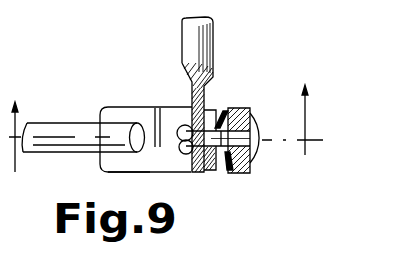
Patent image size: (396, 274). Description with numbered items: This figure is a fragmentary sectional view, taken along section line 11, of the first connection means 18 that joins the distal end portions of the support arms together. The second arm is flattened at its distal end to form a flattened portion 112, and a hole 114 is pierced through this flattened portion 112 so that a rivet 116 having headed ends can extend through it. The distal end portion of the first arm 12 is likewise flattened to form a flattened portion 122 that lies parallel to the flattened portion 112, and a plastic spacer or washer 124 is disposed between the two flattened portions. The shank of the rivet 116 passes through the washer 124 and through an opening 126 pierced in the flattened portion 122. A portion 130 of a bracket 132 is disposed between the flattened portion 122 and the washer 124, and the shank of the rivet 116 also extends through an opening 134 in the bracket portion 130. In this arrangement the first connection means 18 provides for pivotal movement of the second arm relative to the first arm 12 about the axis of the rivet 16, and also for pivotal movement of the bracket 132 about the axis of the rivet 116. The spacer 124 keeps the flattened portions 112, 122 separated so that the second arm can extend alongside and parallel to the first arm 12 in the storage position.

The section line 11 is at (166, 143).
The first arm 12 is at (200, 43).
The rivet 16 is at (73, 122).
The first connection means 18 is at (126, 71).
The flattened portion 112 is at (246, 106).
The hole 114 is at (259, 131).
The rivet 116 is at (218, 148).
The flattened portion 122 is at (188, 110).
The plastic spacer or washer 124 is at (222, 109).
The opening 126 is at (183, 150).
The bracket portion 130 is at (216, 152).
The bracket 132 is at (123, 160).
The opening 134 is at (187, 134).